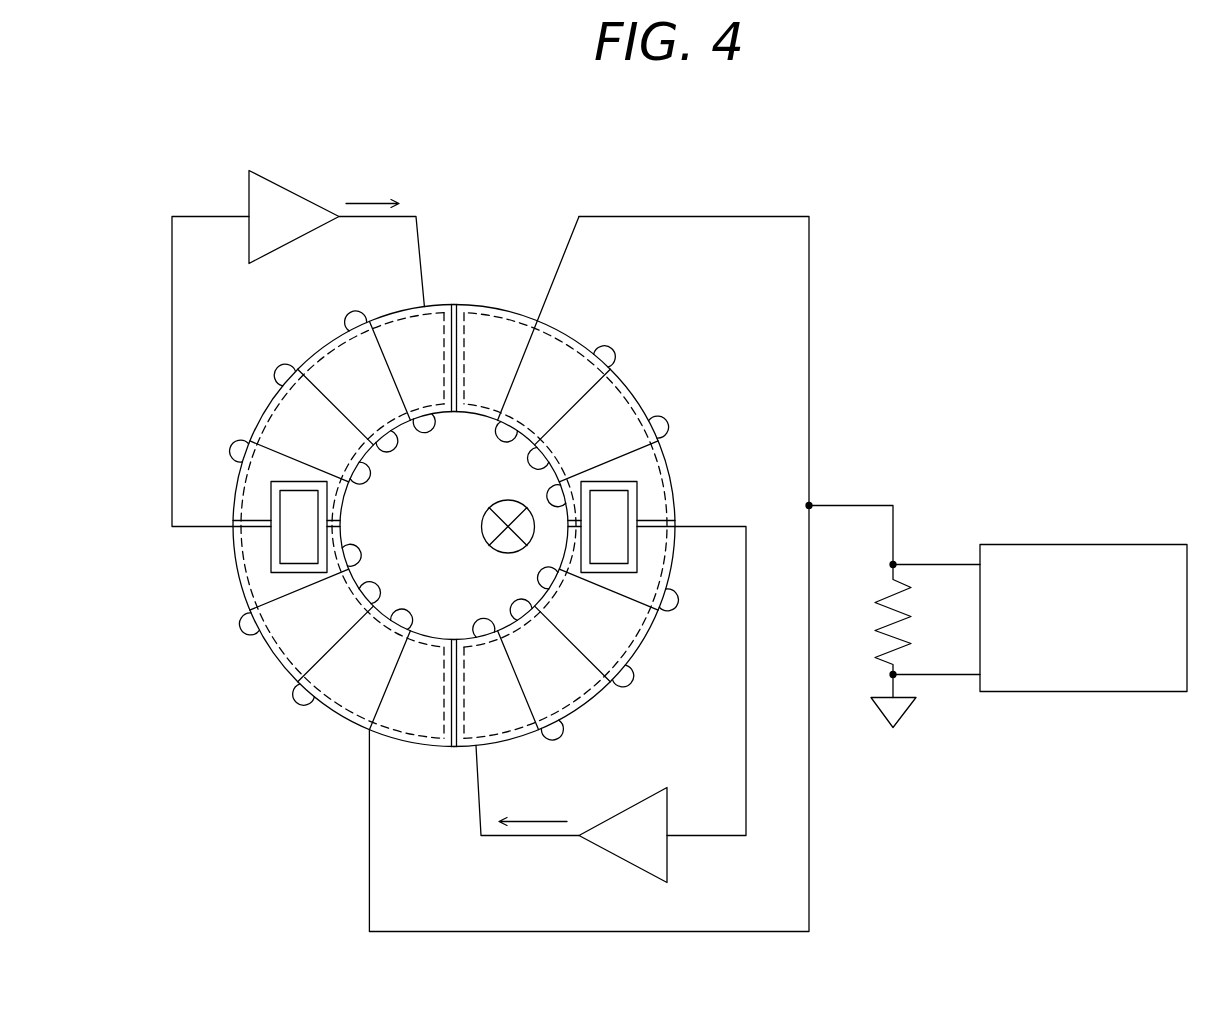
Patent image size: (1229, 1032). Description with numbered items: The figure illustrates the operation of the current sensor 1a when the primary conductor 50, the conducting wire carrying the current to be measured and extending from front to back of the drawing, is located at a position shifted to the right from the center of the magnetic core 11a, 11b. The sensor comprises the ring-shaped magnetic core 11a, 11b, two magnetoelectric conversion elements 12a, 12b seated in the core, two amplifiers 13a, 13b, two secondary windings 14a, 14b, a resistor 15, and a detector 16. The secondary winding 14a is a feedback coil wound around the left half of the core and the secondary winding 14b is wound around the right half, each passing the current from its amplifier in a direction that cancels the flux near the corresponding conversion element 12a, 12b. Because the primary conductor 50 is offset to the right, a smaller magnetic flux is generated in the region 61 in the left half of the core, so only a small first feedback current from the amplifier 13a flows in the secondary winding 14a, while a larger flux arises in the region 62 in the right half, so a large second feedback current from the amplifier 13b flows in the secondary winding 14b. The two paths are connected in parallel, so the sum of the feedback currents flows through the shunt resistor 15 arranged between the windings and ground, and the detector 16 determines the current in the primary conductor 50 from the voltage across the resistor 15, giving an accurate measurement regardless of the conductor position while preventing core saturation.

The current sensor 1a is at (508, 153).
The magnetic core 11a is at (264, 413).
The magnetic core 11b is at (236, 556).
The magnetoelectric conversion element 12a is at (297, 545).
The magnetoelectric conversion element 12b is at (614, 509).
The amplifier 13a is at (283, 183).
The amplifier 13b is at (618, 858).
The secondary winding 14a is at (297, 702).
The secondary winding 14b is at (672, 427).
The resistor 15 is at (912, 614).
The detector 16 is at (1083, 545).
The primary conductor 50 is at (482, 526).
The region 61 is at (410, 346).
The region 62 is at (497, 340).